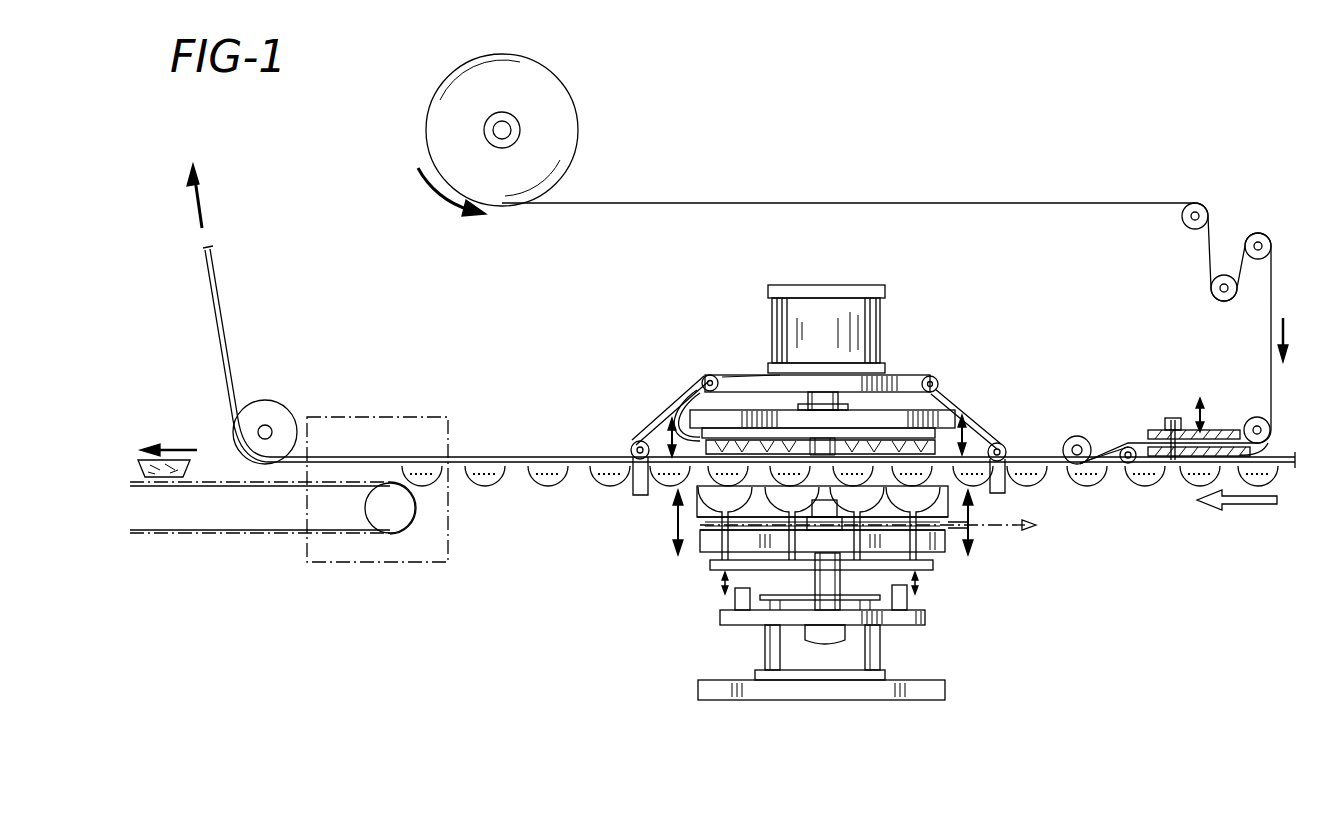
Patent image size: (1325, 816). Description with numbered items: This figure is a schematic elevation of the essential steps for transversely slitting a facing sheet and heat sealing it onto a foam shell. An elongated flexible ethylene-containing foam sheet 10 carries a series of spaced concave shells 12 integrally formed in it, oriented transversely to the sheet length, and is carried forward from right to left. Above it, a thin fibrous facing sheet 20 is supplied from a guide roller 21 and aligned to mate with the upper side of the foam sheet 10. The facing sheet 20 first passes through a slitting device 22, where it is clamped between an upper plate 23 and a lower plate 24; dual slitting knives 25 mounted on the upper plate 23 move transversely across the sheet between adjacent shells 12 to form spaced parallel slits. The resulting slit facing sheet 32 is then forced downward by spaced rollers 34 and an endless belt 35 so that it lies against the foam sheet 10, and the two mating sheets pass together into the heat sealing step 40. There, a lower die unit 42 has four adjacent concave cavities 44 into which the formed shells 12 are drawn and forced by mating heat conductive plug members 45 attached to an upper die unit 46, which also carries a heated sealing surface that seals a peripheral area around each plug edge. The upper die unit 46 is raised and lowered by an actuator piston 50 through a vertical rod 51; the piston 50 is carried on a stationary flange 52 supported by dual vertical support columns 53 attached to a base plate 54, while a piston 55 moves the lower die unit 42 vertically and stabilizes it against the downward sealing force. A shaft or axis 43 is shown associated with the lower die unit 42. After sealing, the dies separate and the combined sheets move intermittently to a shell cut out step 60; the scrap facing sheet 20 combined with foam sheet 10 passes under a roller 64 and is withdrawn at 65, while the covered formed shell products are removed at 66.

The foam sheet 10 is at (1276, 464).
The shells 12 is at (1108, 480).
The facing sheet 20 is at (1094, 203).
The guide roller 21 is at (1258, 417).
The slitting device 22 is at (1137, 413).
The upper plate 23 is at (1216, 428).
The lower plate 24 is at (1264, 447).
The slitting knives 25 is at (1173, 418).
The slit facing sheet 32 is at (1118, 446).
The rollers 34 is at (1066, 440).
The endless belt 35 is at (666, 407).
The heat sealing step 40 is at (730, 333).
The lower die unit 42 is at (948, 546).
The shaft 43 is at (990, 535).
The concave cavities 44 is at (982, 520).
The plug member 45 is at (700, 446).
The upper die unit 46 is at (945, 415).
The actuator piston 50 is at (855, 284).
The vertical rod 51 is at (800, 396).
The stationary flange 52 is at (903, 378).
The vertical support columns 53 is at (852, 408).
The base plate 54 is at (926, 618).
The piston 55 is at (880, 650).
The shell cut out step 60 is at (386, 412).
The roller 64 is at (270, 400).
The scrap withdrawal 65 is at (216, 290).
The covered shell product removal 66 is at (178, 470).